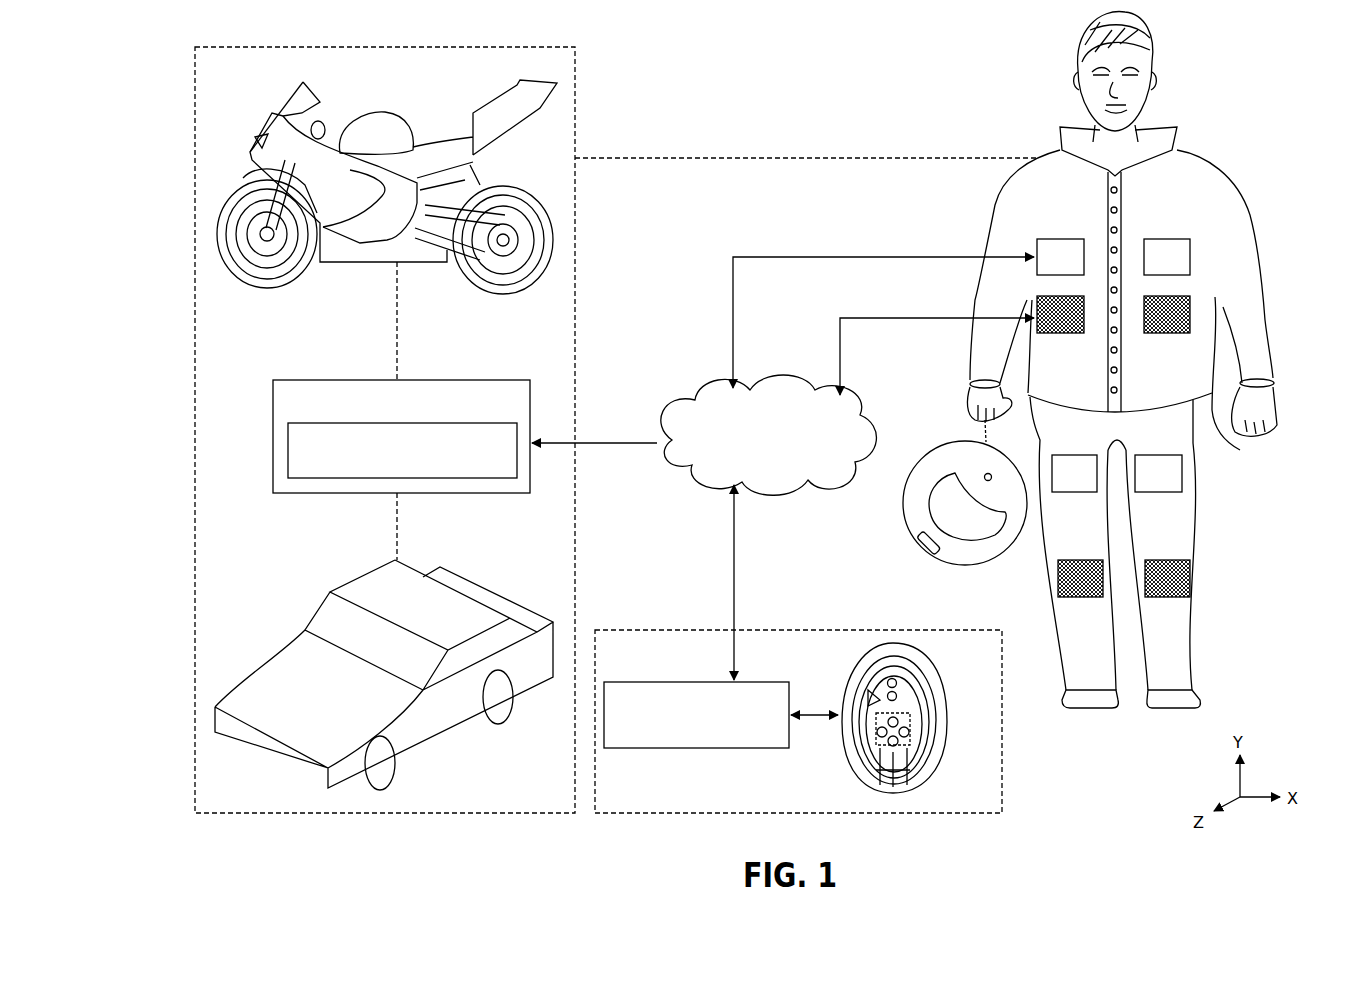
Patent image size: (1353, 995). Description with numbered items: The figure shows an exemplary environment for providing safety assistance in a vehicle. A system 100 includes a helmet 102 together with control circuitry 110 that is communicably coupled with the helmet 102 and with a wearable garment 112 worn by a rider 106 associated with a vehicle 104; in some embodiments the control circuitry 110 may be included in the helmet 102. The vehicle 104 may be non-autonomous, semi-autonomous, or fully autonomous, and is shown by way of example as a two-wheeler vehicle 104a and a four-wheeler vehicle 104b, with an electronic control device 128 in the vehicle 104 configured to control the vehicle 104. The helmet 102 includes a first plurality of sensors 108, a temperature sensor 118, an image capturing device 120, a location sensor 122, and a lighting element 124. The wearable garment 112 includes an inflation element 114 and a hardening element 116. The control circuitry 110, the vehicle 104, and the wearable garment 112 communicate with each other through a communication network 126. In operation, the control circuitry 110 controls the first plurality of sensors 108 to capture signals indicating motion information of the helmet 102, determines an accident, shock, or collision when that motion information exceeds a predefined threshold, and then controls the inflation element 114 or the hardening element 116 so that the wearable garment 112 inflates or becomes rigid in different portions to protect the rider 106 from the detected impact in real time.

The system 100 is at (798, 721).
The helmet 102 is at (937, 672).
The vehicle 104 is at (401, 436).
The two-wheeler vehicle 104a is at (558, 87).
The four-wheeler vehicle 104b is at (520, 603).
The rider 106 is at (1150, 58).
The first plurality of sensors 108 is at (945, 760).
The control circuitry 110 is at (696, 715).
The wearable garment 112 is at (1122, 429).
The inflation element 114 is at (1084, 236).
The hardening element 116 is at (1077, 338).
The temperature sensor 118 is at (898, 686).
The image capturing device 120 is at (920, 552).
The location sensor 122 is at (905, 700).
The lighting element 124 is at (988, 474).
The communication network 126 is at (769, 435).
The electronic control device 128 is at (402, 450).